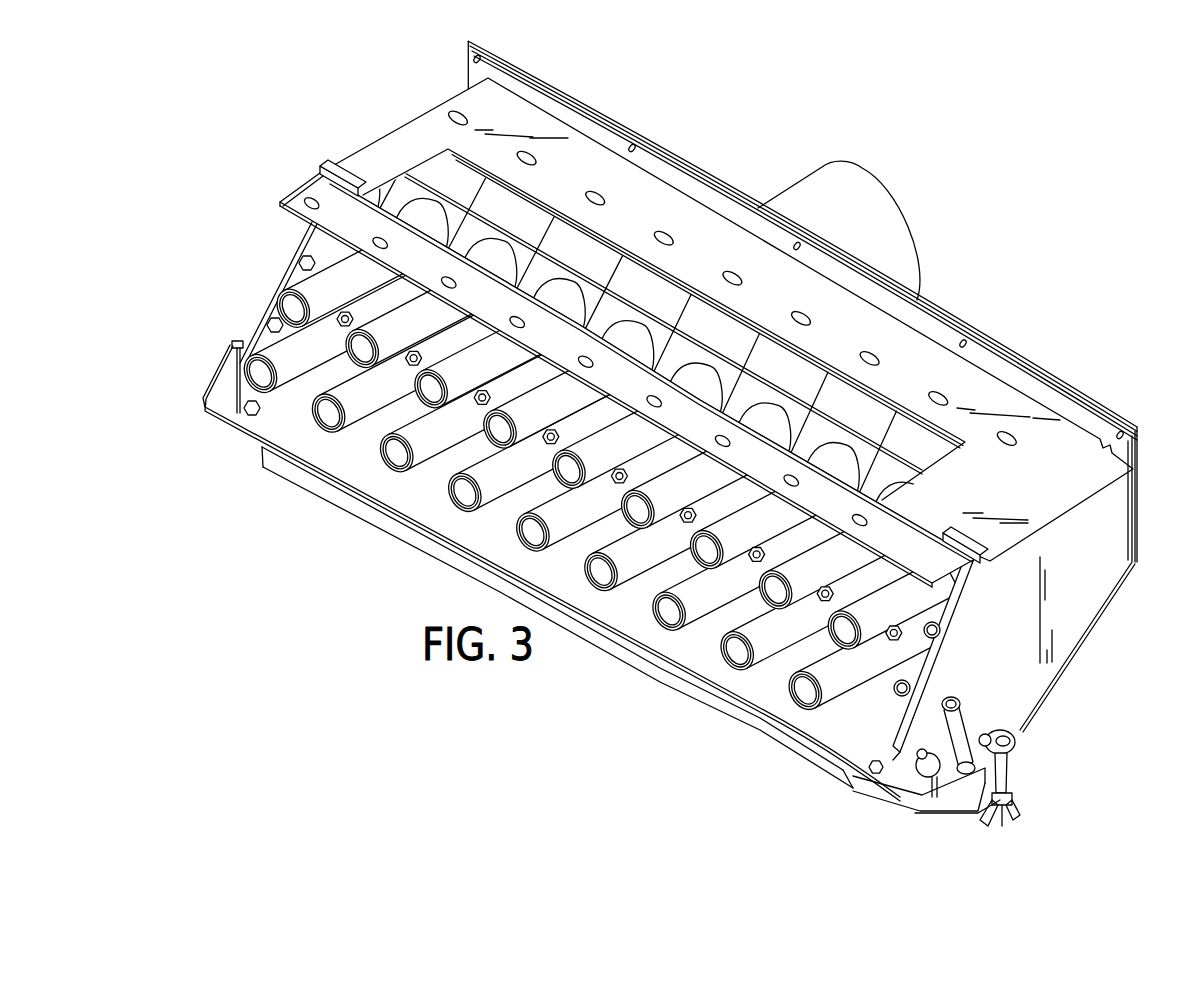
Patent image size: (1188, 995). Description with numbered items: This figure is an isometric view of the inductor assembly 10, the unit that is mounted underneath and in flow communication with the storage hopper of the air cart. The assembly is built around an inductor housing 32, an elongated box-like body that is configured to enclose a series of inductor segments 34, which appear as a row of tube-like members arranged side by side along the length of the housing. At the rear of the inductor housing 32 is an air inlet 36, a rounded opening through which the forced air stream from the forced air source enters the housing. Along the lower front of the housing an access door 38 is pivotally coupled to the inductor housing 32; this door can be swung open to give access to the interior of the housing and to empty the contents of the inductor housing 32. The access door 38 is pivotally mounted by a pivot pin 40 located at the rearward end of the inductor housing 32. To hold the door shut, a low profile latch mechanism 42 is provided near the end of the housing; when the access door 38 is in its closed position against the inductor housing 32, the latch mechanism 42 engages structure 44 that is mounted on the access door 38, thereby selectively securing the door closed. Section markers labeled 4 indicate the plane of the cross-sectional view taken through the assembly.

The inductor assembly 10 is at (290, 120).
The inductor housing 32 is at (1130, 546).
The inductor segments 34 is at (500, 538).
The air inlet 36 is at (858, 168).
The access door 38 is at (918, 816).
The pivot pin 40 is at (913, 740).
The latch mechanism 42 is at (987, 708).
The structure 44 is at (975, 812).
The section line 4- 4 is at (953, 165).